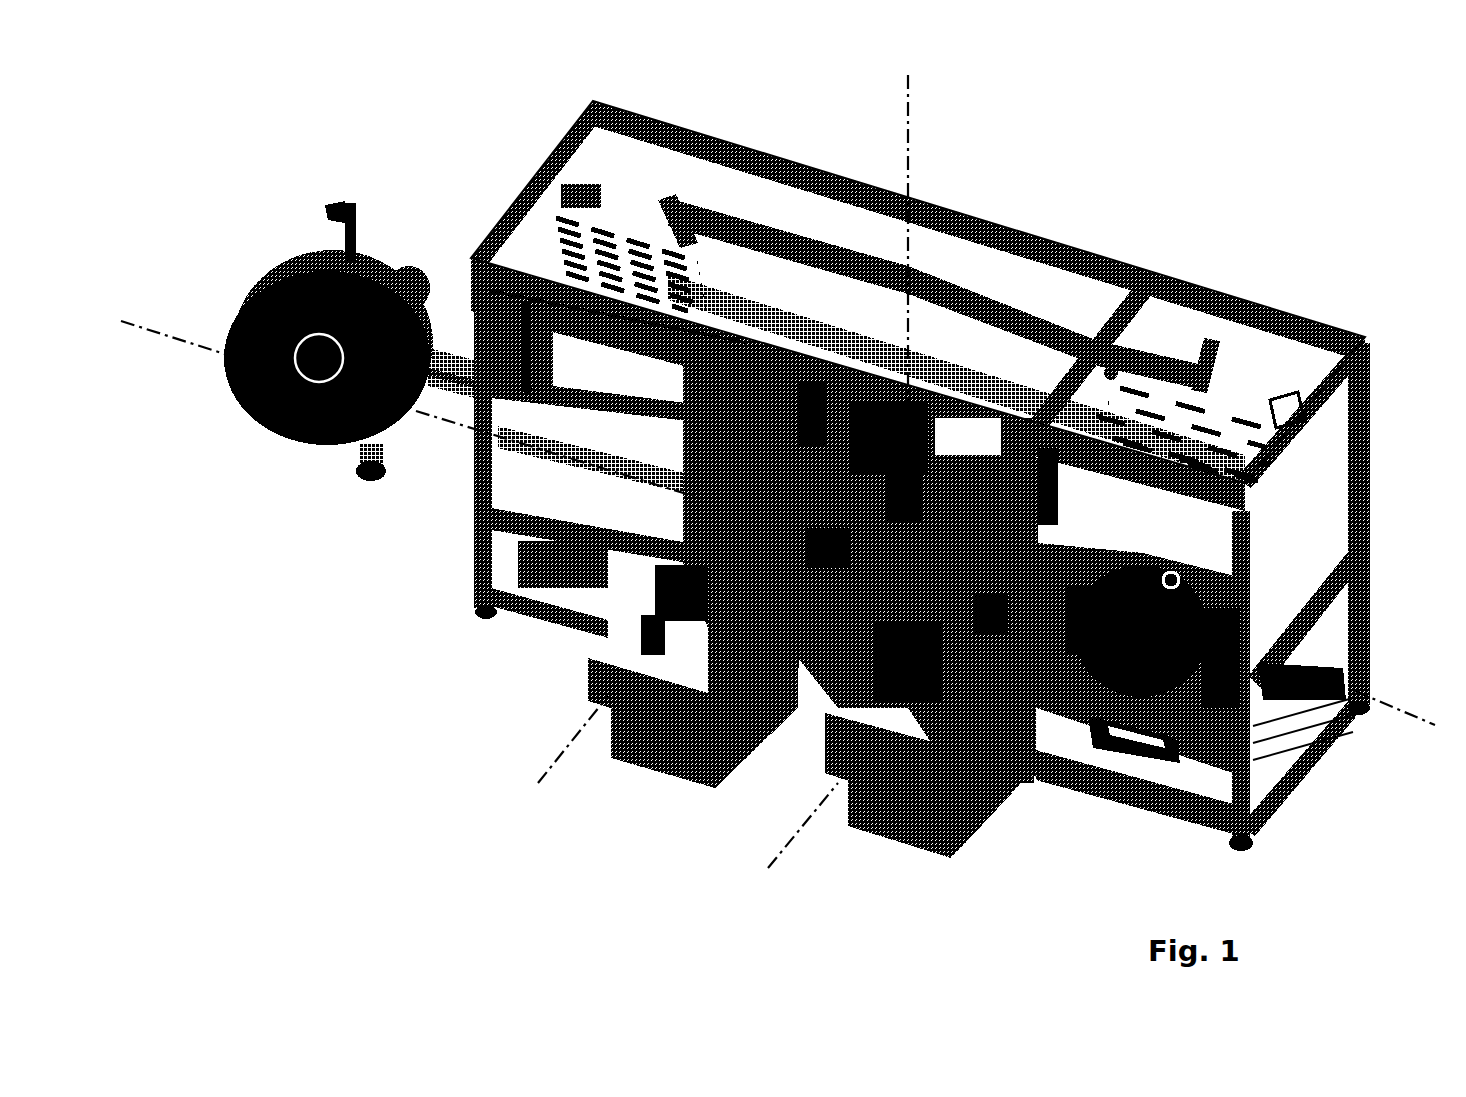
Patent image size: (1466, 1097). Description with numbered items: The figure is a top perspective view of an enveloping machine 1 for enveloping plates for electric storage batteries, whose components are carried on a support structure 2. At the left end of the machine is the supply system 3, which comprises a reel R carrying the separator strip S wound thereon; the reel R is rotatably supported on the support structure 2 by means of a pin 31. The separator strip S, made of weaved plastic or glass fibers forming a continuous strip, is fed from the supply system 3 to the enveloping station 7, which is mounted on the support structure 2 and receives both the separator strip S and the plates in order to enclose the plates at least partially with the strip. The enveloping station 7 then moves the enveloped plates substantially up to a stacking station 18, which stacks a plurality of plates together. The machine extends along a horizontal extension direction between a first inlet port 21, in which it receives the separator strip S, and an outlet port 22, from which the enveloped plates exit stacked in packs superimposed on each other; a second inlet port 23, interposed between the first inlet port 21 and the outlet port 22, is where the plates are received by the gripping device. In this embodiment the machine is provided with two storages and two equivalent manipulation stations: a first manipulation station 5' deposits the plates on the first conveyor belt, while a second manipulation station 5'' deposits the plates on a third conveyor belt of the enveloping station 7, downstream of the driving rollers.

The enveloping machine 1 is at (436, 146).
The support structure 2 is at (1290, 313).
The supply system 3 is at (317, 361).
The pin 31 is at (272, 412).
The reel R is at (233, 370).
The separator strip S is at (310, 433).
The first manipulation station 5' is at (693, 751).
The second manipulation station 5'' is at (926, 813).
The enveloping station 7 is at (828, 425).
The stacking station 18 is at (1107, 742).
The first inlet port 21 is at (542, 430).
The outlet port 22 is at (1313, 683).
The second inlet port 23 is at (702, 508).